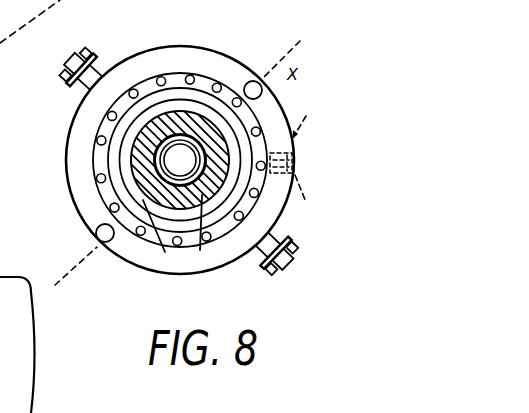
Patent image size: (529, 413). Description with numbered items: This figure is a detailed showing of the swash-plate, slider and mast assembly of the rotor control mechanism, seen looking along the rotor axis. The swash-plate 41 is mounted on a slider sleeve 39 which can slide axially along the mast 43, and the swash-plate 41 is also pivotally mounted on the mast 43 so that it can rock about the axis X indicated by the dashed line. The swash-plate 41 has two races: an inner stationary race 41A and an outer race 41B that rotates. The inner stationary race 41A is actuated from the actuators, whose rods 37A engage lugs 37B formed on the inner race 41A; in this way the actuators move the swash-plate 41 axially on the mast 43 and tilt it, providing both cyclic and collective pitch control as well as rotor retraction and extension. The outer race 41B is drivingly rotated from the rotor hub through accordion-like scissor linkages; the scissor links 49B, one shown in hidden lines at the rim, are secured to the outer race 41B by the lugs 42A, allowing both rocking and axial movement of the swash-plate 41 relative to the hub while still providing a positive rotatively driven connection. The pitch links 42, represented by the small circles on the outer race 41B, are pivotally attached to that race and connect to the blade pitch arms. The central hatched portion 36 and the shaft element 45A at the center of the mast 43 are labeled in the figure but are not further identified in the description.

The lug 36 is at (172, 235).
The actuator rod 37A is at (287, 269).
The lug 37B is at (72, 67).
The slider sleeve 39 is at (202, 232).
The swash-plate 41 is at (246, 255).
The inner stationary race 41A is at (125, 176).
The outer race 41B is at (152, 58).
The pitch link 42 is at (257, 82).
The lug 42A is at (307, 146).
The mast 43 is at (164, 160).
The shaft 45A is at (183, 153).
The scissor link 49B is at (299, 195).